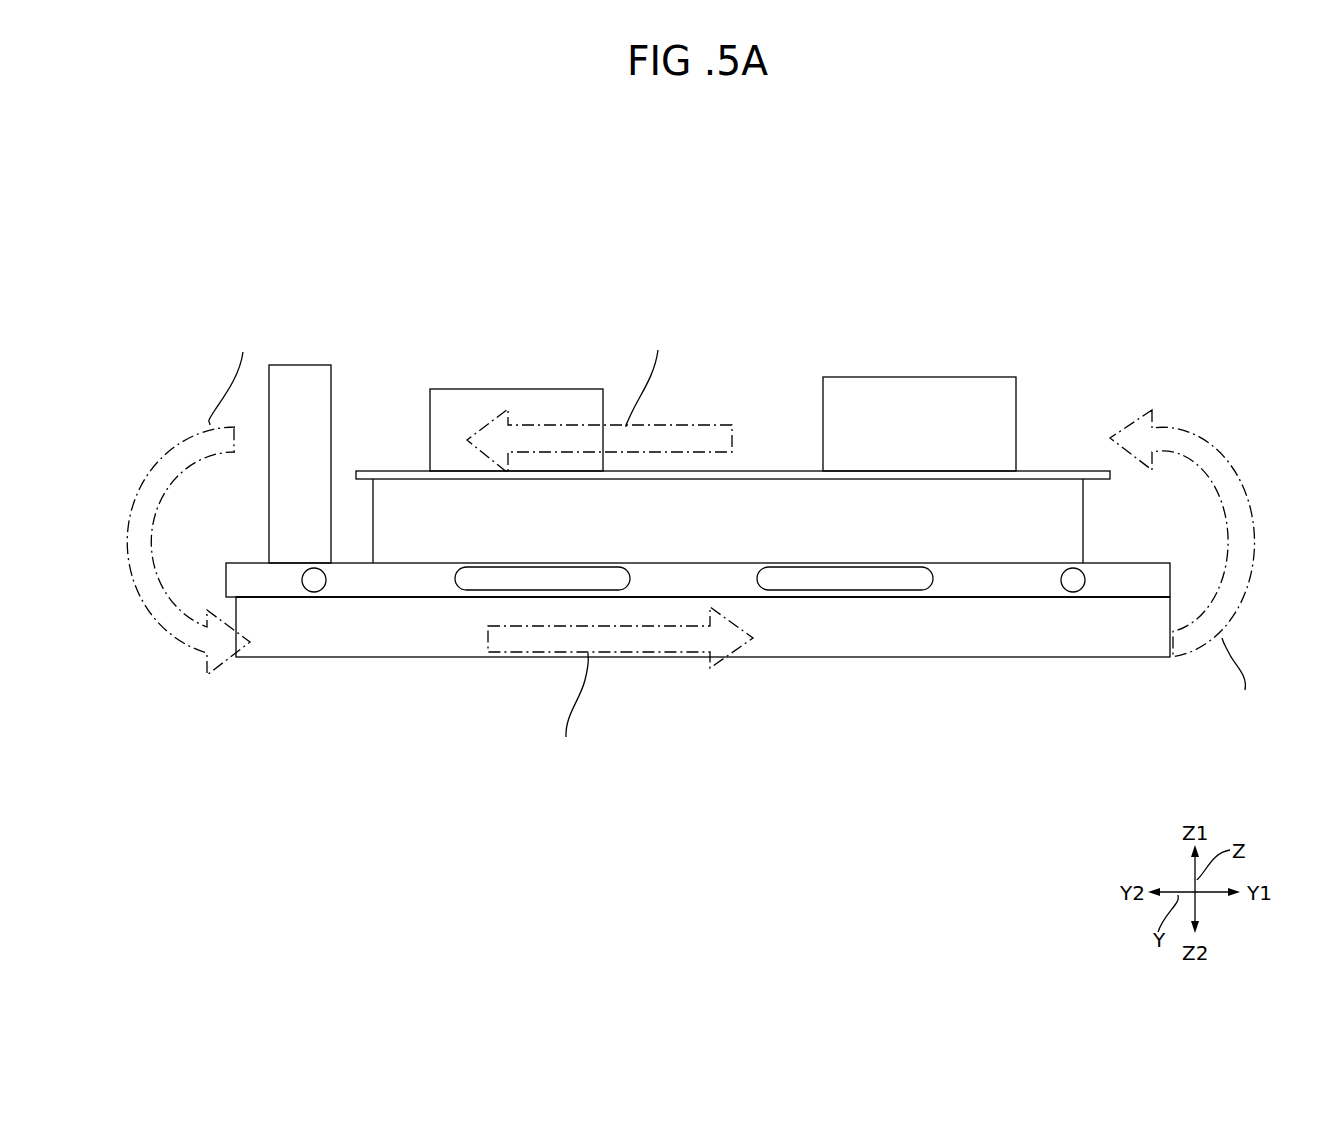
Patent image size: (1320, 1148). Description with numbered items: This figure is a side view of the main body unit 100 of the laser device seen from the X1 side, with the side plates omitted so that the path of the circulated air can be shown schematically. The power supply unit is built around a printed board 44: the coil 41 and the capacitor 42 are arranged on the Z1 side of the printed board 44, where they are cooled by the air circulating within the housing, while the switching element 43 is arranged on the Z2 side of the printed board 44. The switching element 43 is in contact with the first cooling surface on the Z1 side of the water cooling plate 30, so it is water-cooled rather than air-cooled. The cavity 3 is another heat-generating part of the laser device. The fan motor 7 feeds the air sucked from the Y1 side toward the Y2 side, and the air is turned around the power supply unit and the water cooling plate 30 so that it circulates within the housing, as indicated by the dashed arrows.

The main body unit 100 is at (1140, 280).
The fan motor 7 is at (300, 367).
The coil 41 is at (549, 376).
The capacitor 42 is at (966, 363).
The printed board 44 is at (1075, 471).
The switching element 43 is at (468, 537).
The cavity 3 is at (914, 624).
The water cooling plate 30 is at (1125, 615).